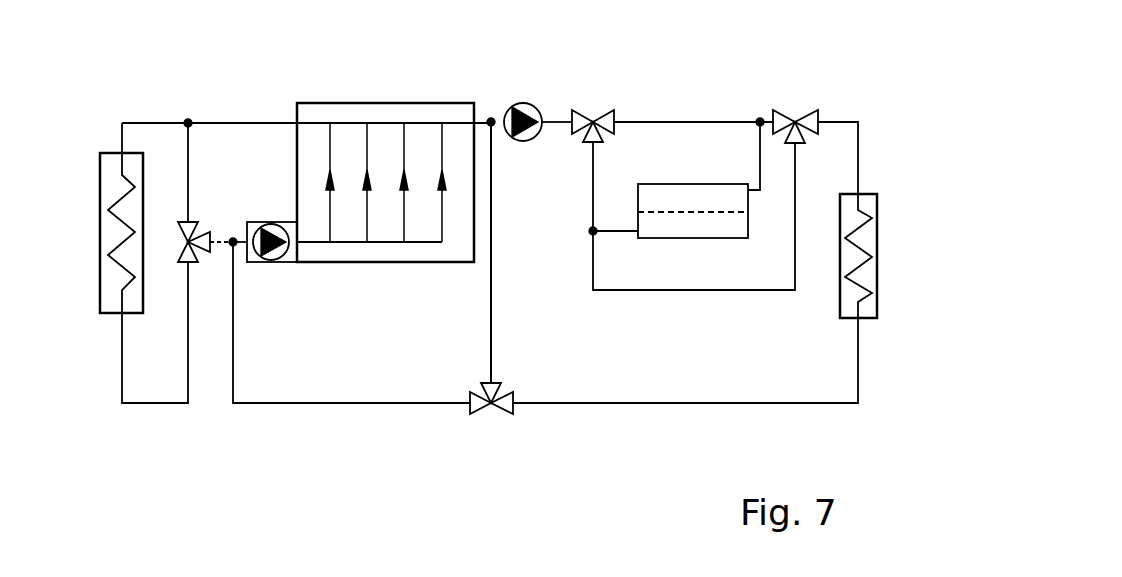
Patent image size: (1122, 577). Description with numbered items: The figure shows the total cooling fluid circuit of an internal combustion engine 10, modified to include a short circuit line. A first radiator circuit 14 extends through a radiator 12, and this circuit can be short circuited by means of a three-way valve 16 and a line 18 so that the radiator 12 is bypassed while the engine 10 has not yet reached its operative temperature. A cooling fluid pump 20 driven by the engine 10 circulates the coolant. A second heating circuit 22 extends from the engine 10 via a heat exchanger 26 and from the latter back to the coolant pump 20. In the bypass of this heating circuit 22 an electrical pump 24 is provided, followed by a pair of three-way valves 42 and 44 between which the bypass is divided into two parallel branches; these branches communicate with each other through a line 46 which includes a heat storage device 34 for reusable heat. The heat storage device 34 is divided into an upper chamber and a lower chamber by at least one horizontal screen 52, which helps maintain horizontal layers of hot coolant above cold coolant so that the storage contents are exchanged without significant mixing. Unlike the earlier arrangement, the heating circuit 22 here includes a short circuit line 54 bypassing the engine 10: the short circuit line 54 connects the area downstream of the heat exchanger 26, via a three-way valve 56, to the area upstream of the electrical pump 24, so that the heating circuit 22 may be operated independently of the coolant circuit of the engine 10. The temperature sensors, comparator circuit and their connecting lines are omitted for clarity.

The internal combustion engine 10 is at (390, 252).
The radiator 12 is at (135, 166).
The first radiator circuit 14 is at (244, 122).
The three-way valve 16 is at (193, 230).
The line 18 is at (190, 187).
The cooling fluid pump 20 is at (280, 256).
The second heating circuit 22 is at (670, 405).
The electrical pump 24 is at (535, 142).
The heat exchanger 26 is at (840, 300).
The heat storage device 34 is at (694, 239).
The three-way valve 42 is at (600, 117).
The three-way valve 44 is at (812, 115).
The line 46 is at (758, 162).
The horizontal screen 52 is at (673, 208).
The short circuit line 54 is at (490, 322).
The three-way valve 56 is at (495, 408).